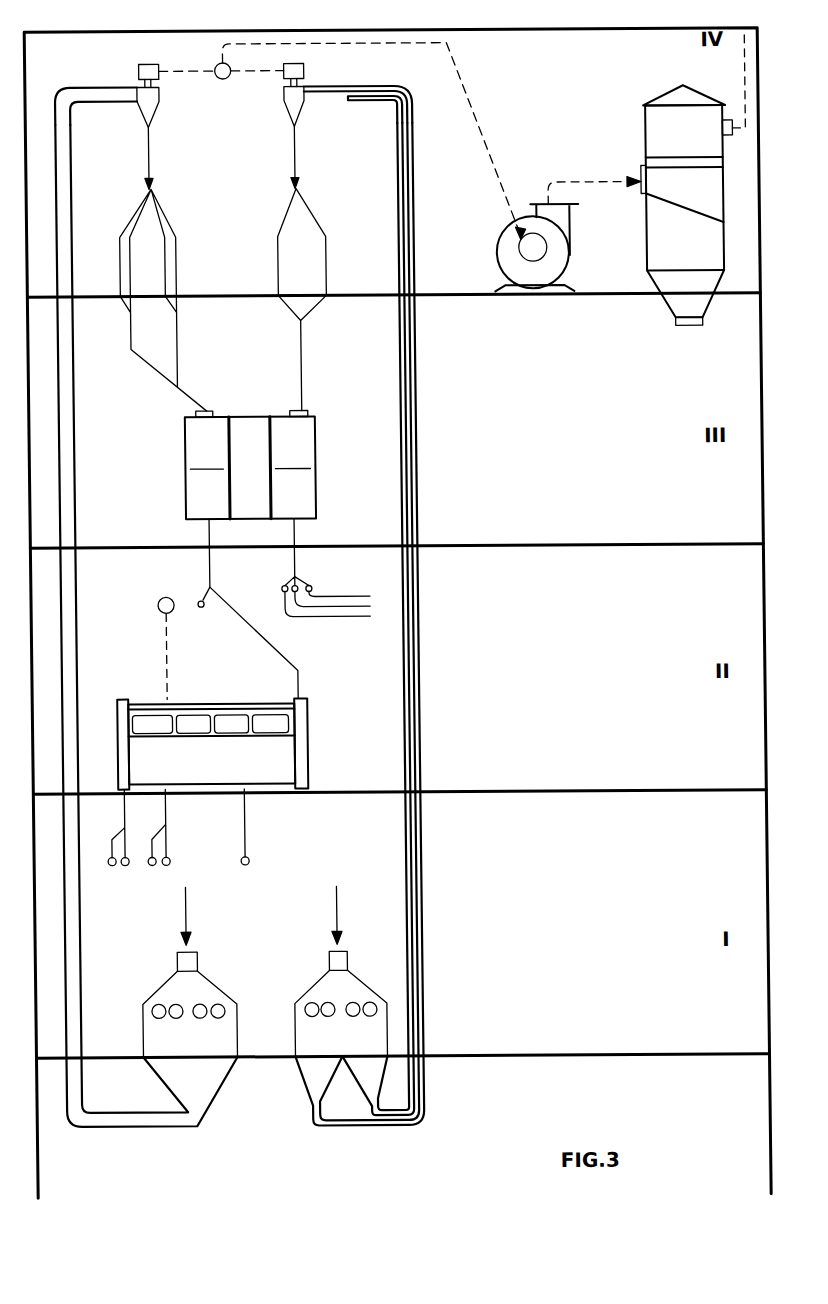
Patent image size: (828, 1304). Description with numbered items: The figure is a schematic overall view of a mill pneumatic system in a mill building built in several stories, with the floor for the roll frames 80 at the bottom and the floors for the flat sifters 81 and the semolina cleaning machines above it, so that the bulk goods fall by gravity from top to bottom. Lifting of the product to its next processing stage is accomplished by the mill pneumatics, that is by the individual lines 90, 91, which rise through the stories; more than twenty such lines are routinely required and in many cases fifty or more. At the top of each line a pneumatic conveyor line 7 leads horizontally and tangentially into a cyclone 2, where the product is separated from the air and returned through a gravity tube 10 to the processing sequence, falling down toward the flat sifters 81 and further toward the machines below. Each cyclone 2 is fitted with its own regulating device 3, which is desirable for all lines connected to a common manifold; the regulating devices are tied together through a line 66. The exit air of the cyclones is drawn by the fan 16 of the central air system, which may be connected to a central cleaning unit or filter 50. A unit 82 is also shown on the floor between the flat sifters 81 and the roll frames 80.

The cyclone 2 is at (159, 95).
The regulating device 3 is at (139, 70).
The pneumatic conveyor line 7 is at (95, 102).
The gravity tube 10 is at (149, 156).
The fan 16 is at (526, 281).
The central cleaning unit or filter 50 is at (690, 265).
The control line 66 is at (410, 46).
The roll frames 80 is at (186, 988).
The flat sifters 81 is at (311, 455).
The control unit 82 is at (278, 760).
The pneumatic line 90 is at (71, 462).
The pneumatic line 91 is at (412, 456).